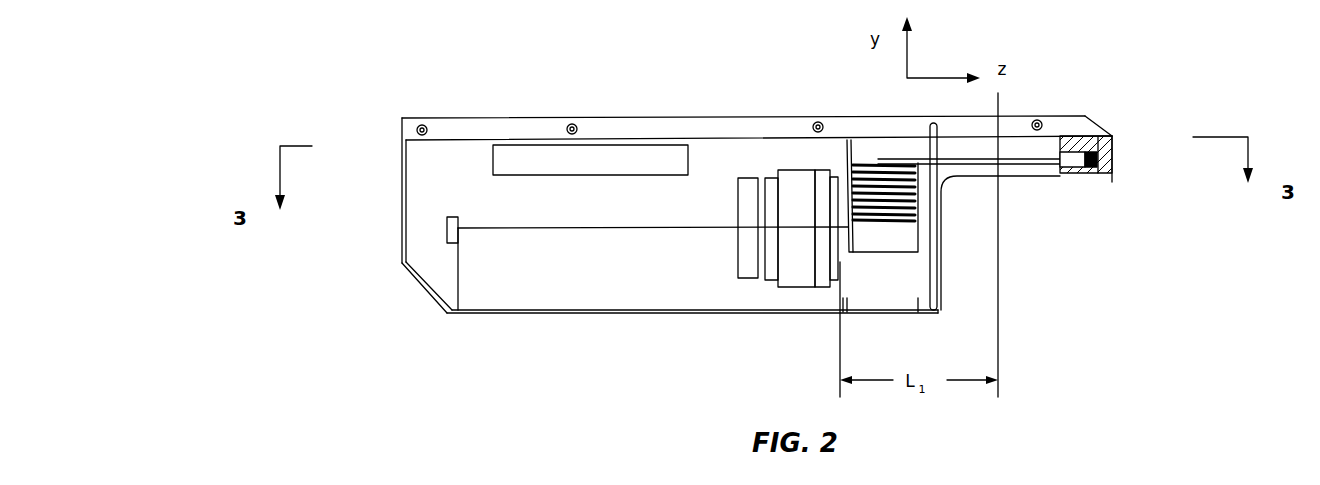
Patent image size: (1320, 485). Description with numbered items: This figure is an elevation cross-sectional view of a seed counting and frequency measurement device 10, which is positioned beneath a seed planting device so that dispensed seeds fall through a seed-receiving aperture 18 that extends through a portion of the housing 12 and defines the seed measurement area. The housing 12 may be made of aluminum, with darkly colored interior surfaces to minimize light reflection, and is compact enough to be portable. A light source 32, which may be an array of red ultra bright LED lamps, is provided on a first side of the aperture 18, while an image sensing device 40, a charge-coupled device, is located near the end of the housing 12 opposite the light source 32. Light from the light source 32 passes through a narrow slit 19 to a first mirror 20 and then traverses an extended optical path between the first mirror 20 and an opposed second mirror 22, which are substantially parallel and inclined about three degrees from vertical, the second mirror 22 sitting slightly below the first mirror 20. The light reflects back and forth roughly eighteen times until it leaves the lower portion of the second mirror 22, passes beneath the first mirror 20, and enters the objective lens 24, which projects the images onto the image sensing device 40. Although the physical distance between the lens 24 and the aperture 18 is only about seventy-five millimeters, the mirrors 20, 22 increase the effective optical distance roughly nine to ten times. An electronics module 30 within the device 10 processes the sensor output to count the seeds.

The seed counting and frequency measurement device 10 is at (1170, 266).
The housing 12 is at (417, 287).
The seed-receiving aperture 18 is at (1010, 168).
The narrow slit 19 is at (940, 157).
The first mirror 20 is at (847, 142).
The second mirror 22 is at (920, 165).
The objective lens 24 is at (805, 288).
The electronics module 30 is at (548, 160).
The light source 32 is at (1112, 136).
The image sensing device 40 is at (447, 227).